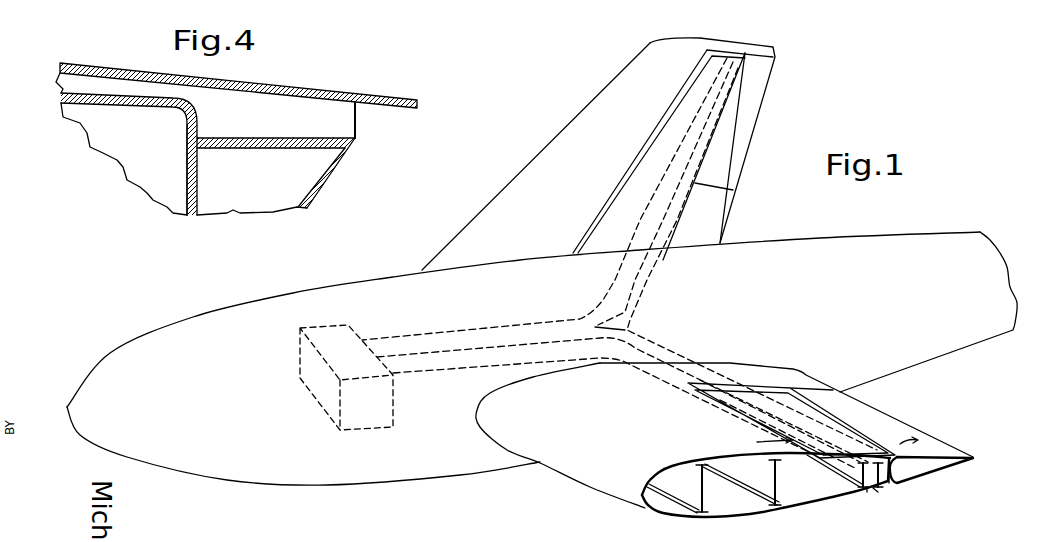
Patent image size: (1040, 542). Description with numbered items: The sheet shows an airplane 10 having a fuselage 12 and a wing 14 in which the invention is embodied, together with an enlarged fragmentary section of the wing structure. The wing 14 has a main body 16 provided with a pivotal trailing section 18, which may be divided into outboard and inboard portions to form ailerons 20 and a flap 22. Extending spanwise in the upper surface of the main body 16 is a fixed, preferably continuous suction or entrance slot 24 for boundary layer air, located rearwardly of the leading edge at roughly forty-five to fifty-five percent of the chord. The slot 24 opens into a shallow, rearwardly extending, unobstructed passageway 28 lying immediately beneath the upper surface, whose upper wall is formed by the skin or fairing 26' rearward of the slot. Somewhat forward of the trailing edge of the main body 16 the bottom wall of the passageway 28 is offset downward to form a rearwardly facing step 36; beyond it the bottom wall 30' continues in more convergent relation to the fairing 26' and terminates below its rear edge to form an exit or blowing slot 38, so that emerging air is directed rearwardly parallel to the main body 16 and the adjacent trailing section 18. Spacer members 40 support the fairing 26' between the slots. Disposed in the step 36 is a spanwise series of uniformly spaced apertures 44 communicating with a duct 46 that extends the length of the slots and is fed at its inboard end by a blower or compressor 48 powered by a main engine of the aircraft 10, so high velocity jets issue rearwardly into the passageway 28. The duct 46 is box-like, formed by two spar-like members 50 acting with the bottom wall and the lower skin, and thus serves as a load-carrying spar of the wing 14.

In FIG. 1, the airplane 10 is at (207, 333).
In FIG. 1, the fuselage 12 is at (883, 245).
In FIG. 1, the wing 14 is at (448, 250).
In FIG. 1, the main body 16 is at (603, 97).
In FIG. 1, the pivotal trailing section 18 is at (760, 73).
In FIG. 1, the ailerons 20 is at (743, 120).
In FIG. 1, the flap 22 is at (717, 218).
In FIG. 1, the suction or entrance slot 24 is at (622, 183).
In FIG. 4, the skin or fairing 26' is at (238, 79).
In FIG. 4, the passageway 28 is at (107, 77).
In FIG. 4, the bottom wall 30' is at (276, 125).
In FIG. 4, the rearwardly facing step 36 is at (194, 111).
In FIG. 4, the exit or blowing slot 38 is at (361, 128).
In FIG. 4, the spacer members 40 is at (355, 117).
In FIG. 4, the apertures 44 is at (187, 133).
In FIG. 4, the duct 46 is at (97, 137).
In FIG. 1, the duct 46 is at (867, 487).
In FIG. 1, the blower or compressor 48 is at (320, 405).
In FIG. 1, the spar-like members 50 is at (890, 483).